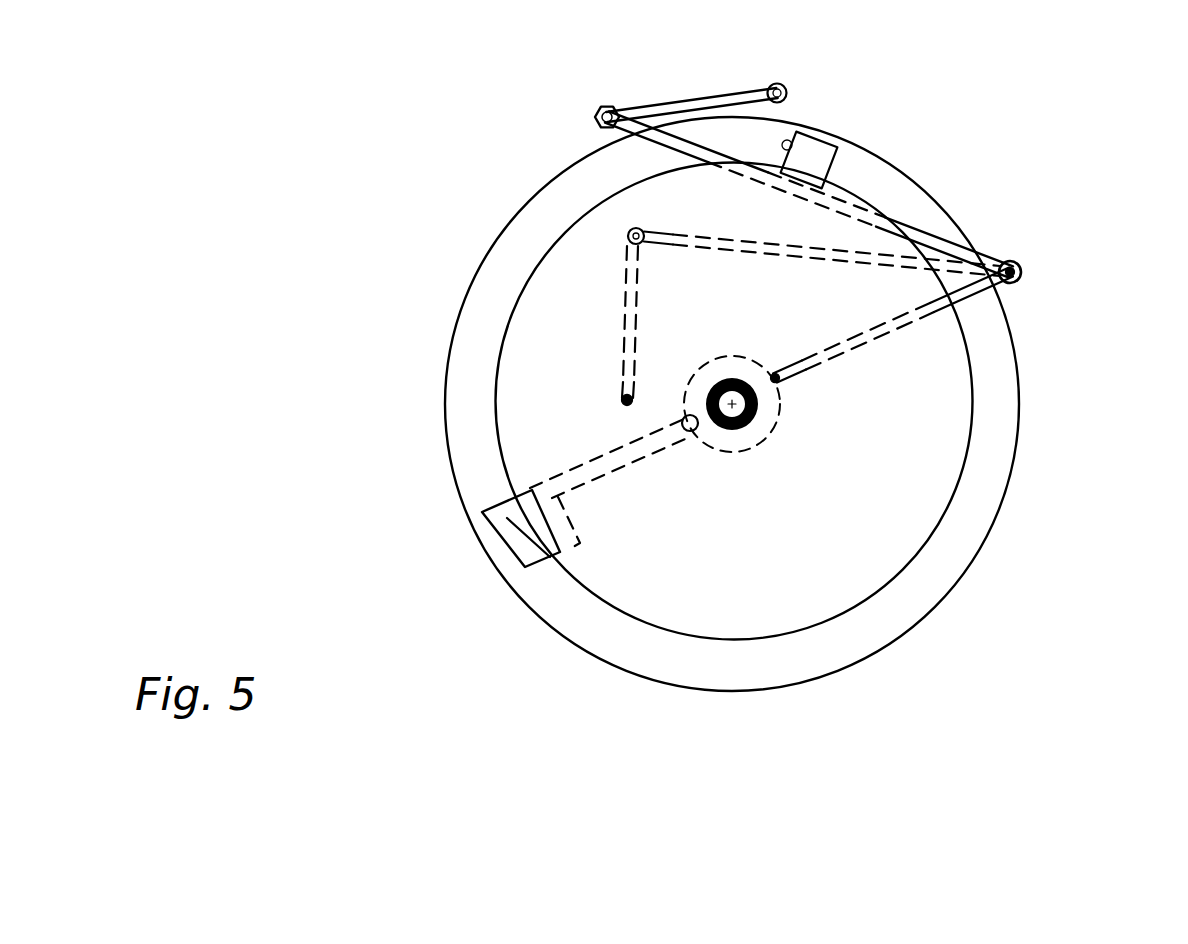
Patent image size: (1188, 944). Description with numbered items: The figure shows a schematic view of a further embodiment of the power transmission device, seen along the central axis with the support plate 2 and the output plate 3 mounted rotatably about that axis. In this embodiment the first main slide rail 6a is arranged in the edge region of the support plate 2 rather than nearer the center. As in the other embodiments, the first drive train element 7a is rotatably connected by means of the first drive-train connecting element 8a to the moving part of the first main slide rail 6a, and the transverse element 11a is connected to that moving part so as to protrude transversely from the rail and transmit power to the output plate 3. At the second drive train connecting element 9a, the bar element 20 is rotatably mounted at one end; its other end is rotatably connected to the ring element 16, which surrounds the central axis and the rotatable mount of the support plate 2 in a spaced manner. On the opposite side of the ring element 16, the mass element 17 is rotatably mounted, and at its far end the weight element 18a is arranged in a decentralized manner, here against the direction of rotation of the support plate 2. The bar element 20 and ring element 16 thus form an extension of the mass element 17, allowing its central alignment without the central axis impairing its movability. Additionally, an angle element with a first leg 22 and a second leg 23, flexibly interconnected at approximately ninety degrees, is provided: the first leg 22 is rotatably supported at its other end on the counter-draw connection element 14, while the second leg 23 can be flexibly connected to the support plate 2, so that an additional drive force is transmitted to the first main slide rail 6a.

The support plate 2 is at (1005, 498).
The output plate 3 is at (927, 547).
The first main slide rail 6a is at (957, 226).
The first drive train element 7a is at (672, 103).
The first drive-train connecting element 8a is at (598, 114).
The second drive train connecting element 9a is at (786, 90).
The transverse element 11a is at (815, 148).
The counter-draw connection element 14 is at (1022, 266).
The ring element 16 is at (780, 383).
The mass element 17 is at (600, 463).
The weight element 18a is at (530, 543).
The bar element 20 is at (906, 324).
The first leg 22 is at (720, 247).
The second leg 23 is at (636, 356).